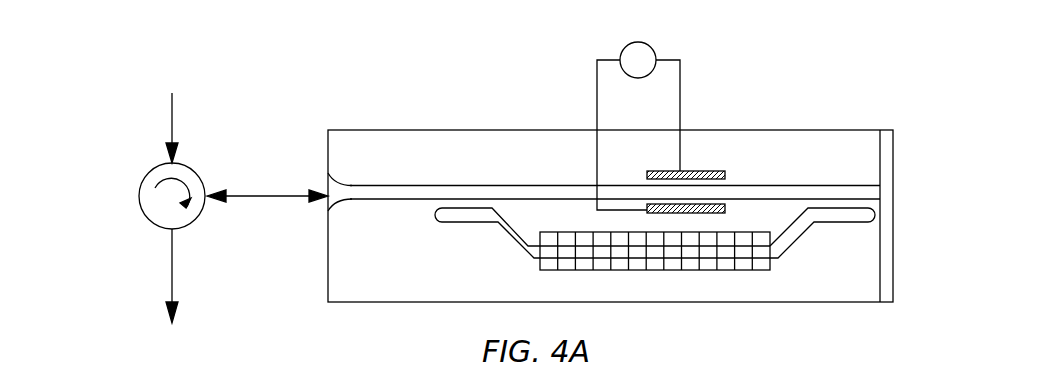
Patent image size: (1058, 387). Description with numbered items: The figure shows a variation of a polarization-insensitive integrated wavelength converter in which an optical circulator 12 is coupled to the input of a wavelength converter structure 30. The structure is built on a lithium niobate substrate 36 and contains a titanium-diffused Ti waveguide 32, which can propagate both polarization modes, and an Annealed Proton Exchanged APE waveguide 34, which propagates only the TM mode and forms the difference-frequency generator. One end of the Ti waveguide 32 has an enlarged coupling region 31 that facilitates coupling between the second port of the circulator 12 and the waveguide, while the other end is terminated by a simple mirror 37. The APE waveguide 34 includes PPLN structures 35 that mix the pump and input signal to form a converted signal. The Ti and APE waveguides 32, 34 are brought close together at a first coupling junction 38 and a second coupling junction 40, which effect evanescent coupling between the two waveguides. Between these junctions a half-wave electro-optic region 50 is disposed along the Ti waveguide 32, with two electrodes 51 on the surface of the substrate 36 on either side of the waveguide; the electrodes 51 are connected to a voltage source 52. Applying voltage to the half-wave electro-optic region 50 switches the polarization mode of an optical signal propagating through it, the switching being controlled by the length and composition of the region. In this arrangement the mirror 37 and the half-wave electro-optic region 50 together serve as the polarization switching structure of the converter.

The optical circulator 12 is at (146, 175).
The wavelength converter structure 30 is at (795, 82).
The enlarged coupling region 31 is at (340, 190).
The Ti waveguide 32 is at (503, 192).
The APE waveguide 34 is at (525, 252).
The PPLN structures 35 is at (710, 262).
The substrate 36 is at (865, 288).
The mirror 37 is at (887, 134).
The first coupling junction 38 is at (467, 206).
The second coupling junction 40 is at (853, 213).
The half-wave electro-optic region 50 is at (708, 195).
The electrodes 51 is at (693, 203).
The voltage source 52 is at (655, 52).